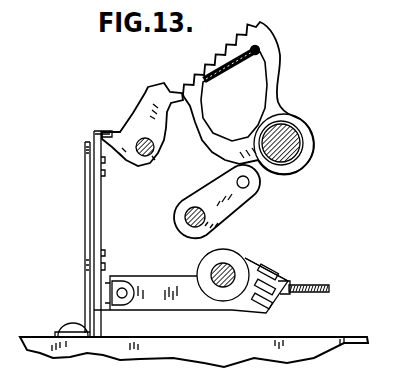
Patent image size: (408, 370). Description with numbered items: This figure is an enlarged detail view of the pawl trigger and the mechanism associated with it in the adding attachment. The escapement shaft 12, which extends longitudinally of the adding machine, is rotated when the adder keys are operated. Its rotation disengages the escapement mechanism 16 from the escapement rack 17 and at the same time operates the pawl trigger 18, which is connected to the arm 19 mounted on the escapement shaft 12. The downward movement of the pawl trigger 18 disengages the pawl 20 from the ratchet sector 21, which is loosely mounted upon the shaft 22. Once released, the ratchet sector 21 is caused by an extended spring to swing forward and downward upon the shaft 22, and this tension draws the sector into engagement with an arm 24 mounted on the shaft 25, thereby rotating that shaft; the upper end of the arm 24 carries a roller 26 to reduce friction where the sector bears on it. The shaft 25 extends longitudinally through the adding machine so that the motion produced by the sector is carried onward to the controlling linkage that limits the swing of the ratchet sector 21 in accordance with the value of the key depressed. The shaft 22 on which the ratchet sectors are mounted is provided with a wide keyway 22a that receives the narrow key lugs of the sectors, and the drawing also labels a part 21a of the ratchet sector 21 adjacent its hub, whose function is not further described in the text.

The escapement shaft 12 is at (232, 268).
The escapement mechanism 16 is at (262, 268).
The escapement rack 17 is at (324, 287).
The pawl trigger 18 is at (90, 210).
The arm 19 is at (150, 277).
The pawl 20 is at (150, 88).
The ratchet sector 21 is at (284, 98).
The boss of lever 21a is at (294, 135).
The shaft 22 is at (300, 137).
The keyway 22a is at (284, 128).
The arm 24 is at (223, 199).
The shaft 25 is at (185, 215).
The roller 26 is at (260, 186).